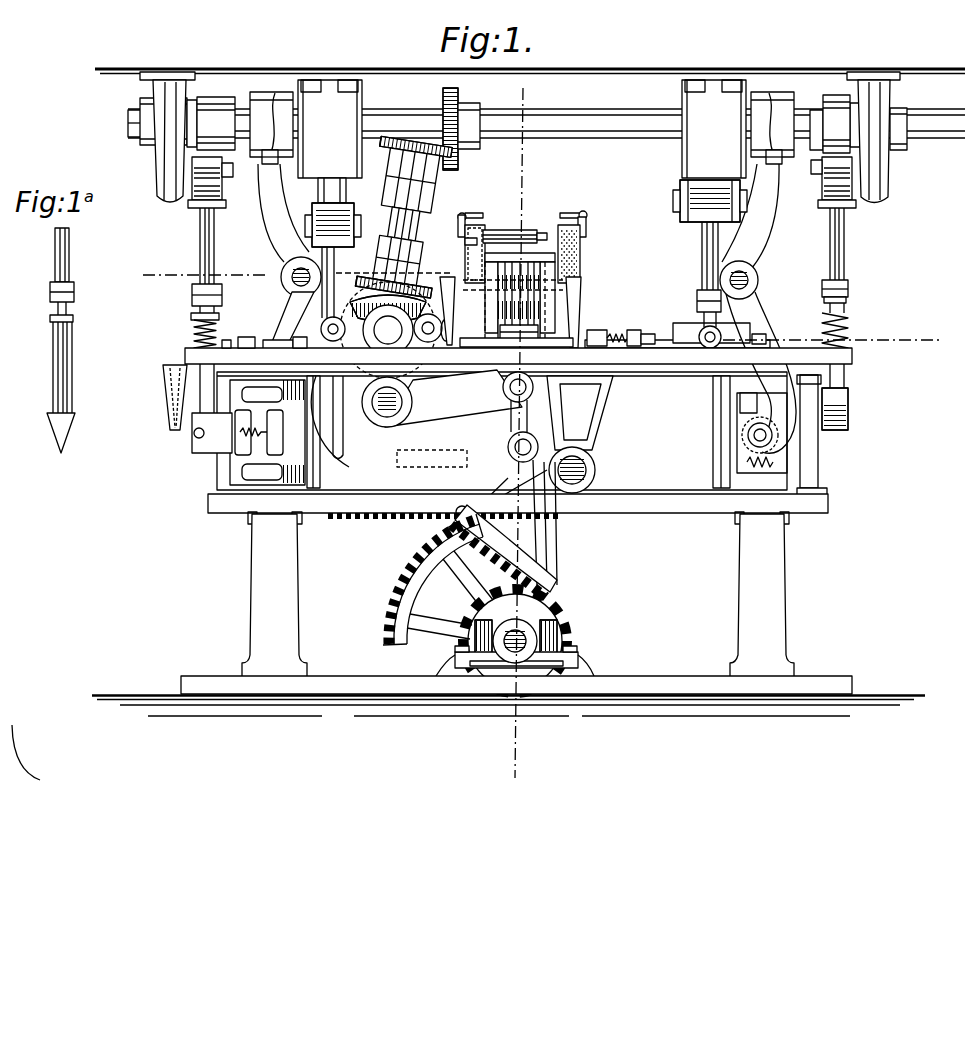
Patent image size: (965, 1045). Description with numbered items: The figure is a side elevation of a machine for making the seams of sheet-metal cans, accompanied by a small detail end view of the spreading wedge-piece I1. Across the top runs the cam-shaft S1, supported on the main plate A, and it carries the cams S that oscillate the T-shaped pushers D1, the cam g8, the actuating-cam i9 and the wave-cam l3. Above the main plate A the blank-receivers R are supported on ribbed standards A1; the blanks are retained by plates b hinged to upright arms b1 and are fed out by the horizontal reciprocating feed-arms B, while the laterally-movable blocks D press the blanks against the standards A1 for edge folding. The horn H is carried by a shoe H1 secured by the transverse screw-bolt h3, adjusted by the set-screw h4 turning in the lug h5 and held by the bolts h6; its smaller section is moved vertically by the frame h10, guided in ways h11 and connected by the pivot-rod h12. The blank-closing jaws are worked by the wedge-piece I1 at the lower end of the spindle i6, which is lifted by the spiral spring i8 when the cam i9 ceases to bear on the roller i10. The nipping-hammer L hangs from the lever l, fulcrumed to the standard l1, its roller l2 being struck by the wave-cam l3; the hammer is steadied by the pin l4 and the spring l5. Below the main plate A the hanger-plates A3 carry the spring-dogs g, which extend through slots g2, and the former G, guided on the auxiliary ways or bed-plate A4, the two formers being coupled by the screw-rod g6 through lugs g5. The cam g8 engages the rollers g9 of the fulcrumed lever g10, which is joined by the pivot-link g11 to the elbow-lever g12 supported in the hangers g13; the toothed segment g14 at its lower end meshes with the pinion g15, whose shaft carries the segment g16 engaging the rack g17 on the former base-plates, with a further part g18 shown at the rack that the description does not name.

In FIG. 1, the cam-shaft S1 is at (546, 140).
In FIG. 1, the actuating-cam i9 is at (523, 117).
In FIG. 1, the wave-cam l3 is at (522, 114).
In FIG. 1, the anti-friction roller l2 is at (783, 174).
In FIG. 1, the ways h11 is at (522, 129).
In FIG. 1, the vertically-sliding frame h10 is at (690, 188).
In FIG. 1, the pivot-rod h12 is at (706, 262).
In FIG. 1, the transverse screw-bolt h3 is at (720, 333).
In FIG. 1, the shoe H1 is at (668, 336).
In FIG. 1, the lug h5 is at (601, 331).
In FIG. 1, the set-screw h4 is at (624, 331).
In FIG. 1, the bolts h6 is at (655, 333).
In FIG. 1, the anti-friction roller i10 is at (208, 176).
In FIG. 1, the spindle i6 is at (523, 310).
In FIG. 1A, the spindle i6 is at (68, 320).
In FIG. 1, the spiral spring i8 is at (529, 333).
In FIG. 1, the lever l is at (527, 308).
In FIG. 1, the supporting-standard l1 is at (282, 303).
In FIG. 1, the steadying-pin l4 is at (747, 393).
In FIG. 1, the spiral spring l5 is at (760, 477).
In FIG. 1, the nipping-hammer L is at (773, 418).
In FIG. 1, the cam g8 is at (388, 330).
In FIG. 1, the cams S is at (388, 330).
In FIG. 1, the anti-friction rollers g9 is at (321, 329).
In FIG. 1, the lugs g5 is at (432, 320).
In FIG. 1, the slots g2 is at (457, 324).
In FIG. 1, the plates b is at (522, 205).
In FIG. 1, the upright supporting-arms b1 is at (527, 224).
In FIG. 1, the blank-receivers R is at (520, 254).
In FIG. 1, the horizontal reciprocating feed-arms B is at (515, 225).
In FIG. 1, the laterally-movable blocks D is at (518, 297).
In FIG. 1, the T-shaped pushers D1 is at (516, 345).
In FIG. 1, the ribbed angular standards A1 is at (581, 301).
In FIG. 1, the main plate A is at (186, 354).
In FIG. 1, the hanger-plates A3 is at (522, 435).
In FIG. 1, the auxiliary ways A4 is at (334, 548).
In FIG. 1, the shaping-horn H is at (518, 432).
In FIG. 1, the former G is at (344, 417).
In FIG. 1, the screw-rod g6 is at (445, 467).
In FIG. 1, the spring-dogs g is at (497, 499).
In FIG. 1, the fulcrumed lever g10 is at (416, 418).
In FIG. 1, the pivot-link g11 is at (536, 405).
In FIG. 1, the hangers g13 is at (591, 430).
In FIG. 1, the elbow-lever g12 is at (558, 536).
In FIG. 1, the segment rack g14 is at (523, 557).
In FIG. 1, the pinion g15 is at (519, 641).
In FIG. 1, the toothed segment g16 is at (438, 595).
In FIG. 1, the rack g17 is at (444, 531).
In FIG. 1, the pawl g18 is at (455, 515).
In FIG. 1, the wedge-piece I1 is at (200, 450).
In FIG. 1A, the wedge-piece I1 is at (68, 434).